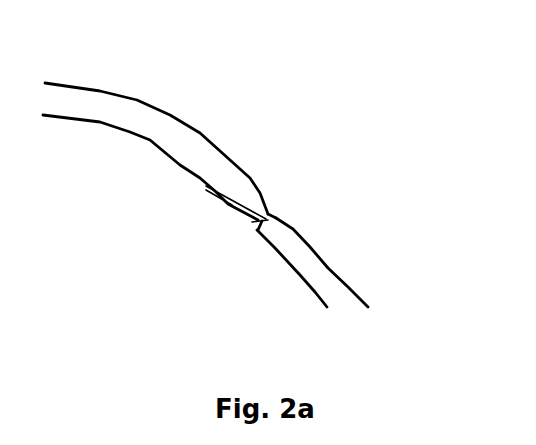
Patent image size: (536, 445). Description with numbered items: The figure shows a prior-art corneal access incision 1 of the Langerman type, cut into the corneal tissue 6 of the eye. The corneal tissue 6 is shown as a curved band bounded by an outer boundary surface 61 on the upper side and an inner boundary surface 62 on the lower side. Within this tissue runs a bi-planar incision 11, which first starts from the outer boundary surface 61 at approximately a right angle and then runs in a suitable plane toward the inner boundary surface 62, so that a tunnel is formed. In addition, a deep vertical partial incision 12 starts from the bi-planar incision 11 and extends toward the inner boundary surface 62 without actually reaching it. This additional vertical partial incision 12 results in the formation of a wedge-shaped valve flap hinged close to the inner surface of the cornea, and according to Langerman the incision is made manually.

The corneal access incision 1 is at (305, 216).
The corneal tissue 6 is at (232, 174).
The outer boundary surface 61 is at (186, 131).
The inner boundary surface 62 is at (144, 147).
The bi-planar incision 11 is at (213, 222).
The deep vertical partial incision 12 is at (254, 246).